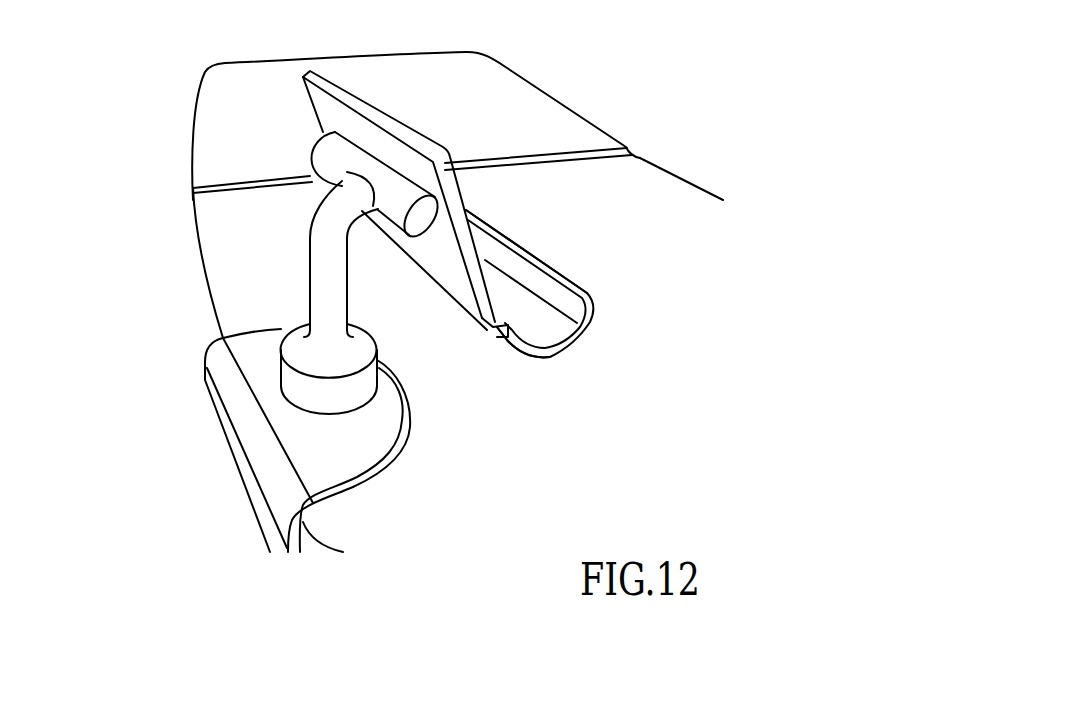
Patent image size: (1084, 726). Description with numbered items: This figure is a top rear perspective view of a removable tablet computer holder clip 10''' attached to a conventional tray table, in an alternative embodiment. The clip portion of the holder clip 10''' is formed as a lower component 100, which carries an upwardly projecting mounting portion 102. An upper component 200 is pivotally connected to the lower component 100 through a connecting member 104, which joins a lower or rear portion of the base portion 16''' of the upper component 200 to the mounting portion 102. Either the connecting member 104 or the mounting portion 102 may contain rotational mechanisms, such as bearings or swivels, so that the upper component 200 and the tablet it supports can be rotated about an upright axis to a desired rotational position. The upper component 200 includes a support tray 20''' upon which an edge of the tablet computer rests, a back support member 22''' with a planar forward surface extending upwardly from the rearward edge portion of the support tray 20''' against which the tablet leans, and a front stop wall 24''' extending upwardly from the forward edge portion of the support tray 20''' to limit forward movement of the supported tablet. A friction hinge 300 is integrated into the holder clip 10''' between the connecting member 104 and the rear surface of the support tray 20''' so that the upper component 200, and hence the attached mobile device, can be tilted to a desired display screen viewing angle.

The holder clip 10''' is at (510, 251).
The base portion 16''' is at (444, 271).
The support tray 20''' is at (592, 306).
The back support member 22''' is at (591, 364).
The front stop wall 24''' is at (573, 251).
The lower component 100 is at (390, 478).
The mounting portion 102 is at (386, 366).
The connecting member 104 is at (308, 280).
The upper component 200 is at (158, 151).
The friction hinge 300 is at (327, 157).